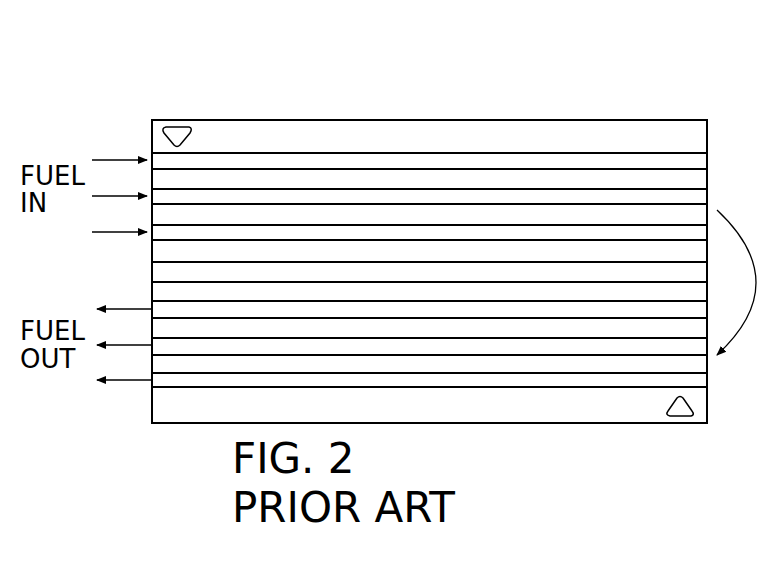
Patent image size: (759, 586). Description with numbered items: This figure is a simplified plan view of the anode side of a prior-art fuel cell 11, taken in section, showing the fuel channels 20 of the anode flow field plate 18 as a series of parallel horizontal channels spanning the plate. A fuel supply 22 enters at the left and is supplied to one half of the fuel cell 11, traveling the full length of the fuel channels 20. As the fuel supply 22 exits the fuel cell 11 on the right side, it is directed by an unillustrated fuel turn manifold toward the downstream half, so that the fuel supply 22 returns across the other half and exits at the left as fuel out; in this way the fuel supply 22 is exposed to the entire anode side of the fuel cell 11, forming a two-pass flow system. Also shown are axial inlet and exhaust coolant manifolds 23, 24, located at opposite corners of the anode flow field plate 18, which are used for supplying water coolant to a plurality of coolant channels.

The fuel cell 11 is at (113, 92).
The anode flow field plate 18 is at (612, 138).
The fuel channels 20 is at (393, 160).
The fuel supply 22 is at (120, 157).
The inlet coolant manifold 23 is at (173, 138).
The exhaust coolant manifold 24 is at (680, 417).